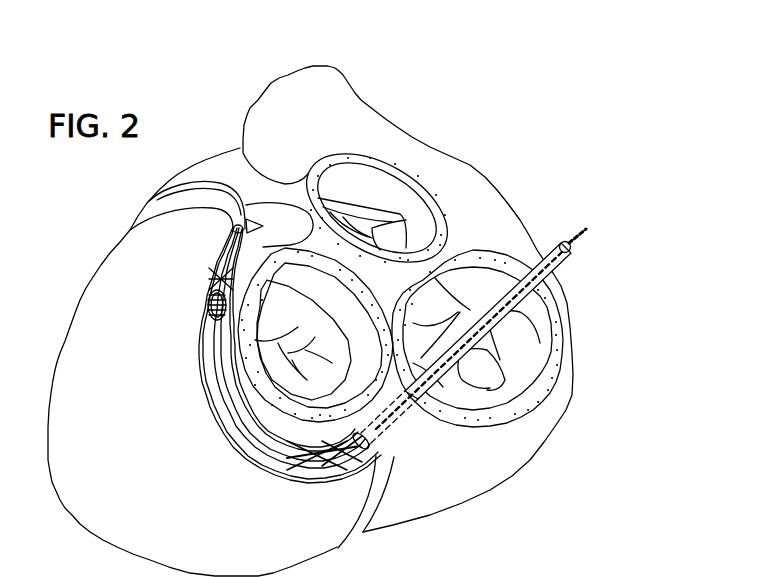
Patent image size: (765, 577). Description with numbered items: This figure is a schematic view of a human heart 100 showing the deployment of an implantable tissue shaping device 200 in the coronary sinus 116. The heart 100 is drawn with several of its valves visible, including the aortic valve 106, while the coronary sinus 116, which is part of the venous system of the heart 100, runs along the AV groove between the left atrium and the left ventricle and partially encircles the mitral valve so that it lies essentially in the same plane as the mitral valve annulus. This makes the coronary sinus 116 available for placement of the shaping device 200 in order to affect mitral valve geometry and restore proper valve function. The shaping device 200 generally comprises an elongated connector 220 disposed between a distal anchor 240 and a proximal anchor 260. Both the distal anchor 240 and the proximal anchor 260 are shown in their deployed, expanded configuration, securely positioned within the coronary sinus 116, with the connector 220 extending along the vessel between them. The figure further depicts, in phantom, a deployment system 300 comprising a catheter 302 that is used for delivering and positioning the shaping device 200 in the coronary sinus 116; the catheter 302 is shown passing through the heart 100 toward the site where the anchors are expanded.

The heart 100 is at (430, 87).
The aortic valve 106 is at (405, 197).
The coronary sinus 116 is at (201, 333).
The shaping device 200 is at (231, 425).
The elongated connector 220 is at (216, 382).
The distal anchor 240 is at (211, 281).
The proximal anchor 260 is at (303, 463).
The deployment system 300 is at (557, 218).
The catheter 302 is at (562, 256).